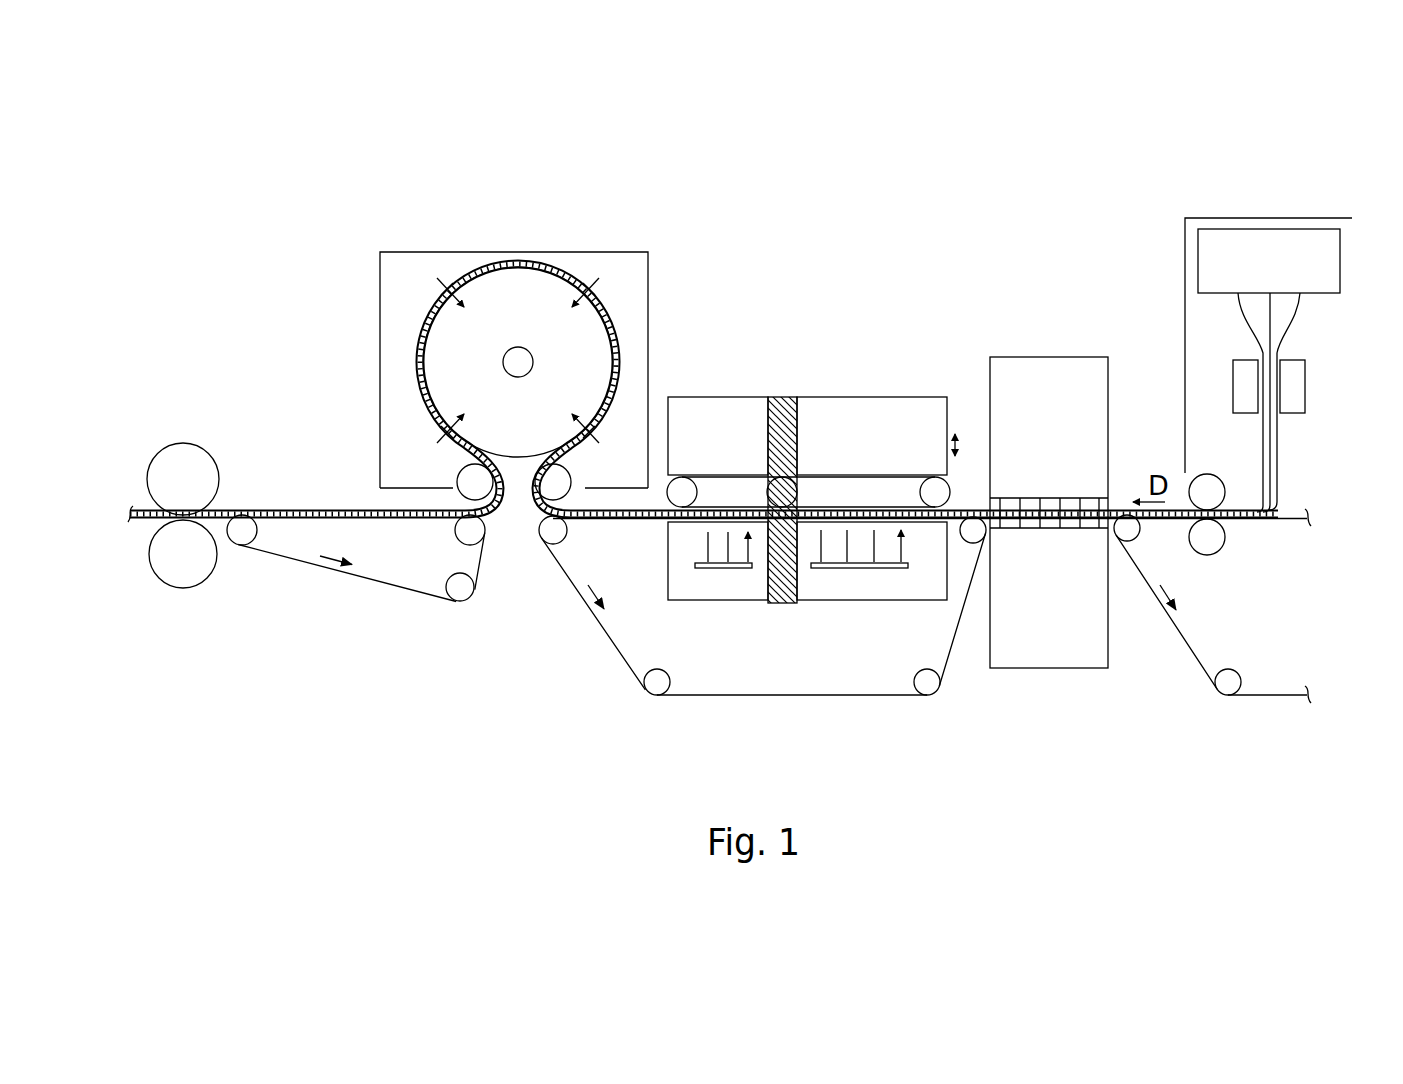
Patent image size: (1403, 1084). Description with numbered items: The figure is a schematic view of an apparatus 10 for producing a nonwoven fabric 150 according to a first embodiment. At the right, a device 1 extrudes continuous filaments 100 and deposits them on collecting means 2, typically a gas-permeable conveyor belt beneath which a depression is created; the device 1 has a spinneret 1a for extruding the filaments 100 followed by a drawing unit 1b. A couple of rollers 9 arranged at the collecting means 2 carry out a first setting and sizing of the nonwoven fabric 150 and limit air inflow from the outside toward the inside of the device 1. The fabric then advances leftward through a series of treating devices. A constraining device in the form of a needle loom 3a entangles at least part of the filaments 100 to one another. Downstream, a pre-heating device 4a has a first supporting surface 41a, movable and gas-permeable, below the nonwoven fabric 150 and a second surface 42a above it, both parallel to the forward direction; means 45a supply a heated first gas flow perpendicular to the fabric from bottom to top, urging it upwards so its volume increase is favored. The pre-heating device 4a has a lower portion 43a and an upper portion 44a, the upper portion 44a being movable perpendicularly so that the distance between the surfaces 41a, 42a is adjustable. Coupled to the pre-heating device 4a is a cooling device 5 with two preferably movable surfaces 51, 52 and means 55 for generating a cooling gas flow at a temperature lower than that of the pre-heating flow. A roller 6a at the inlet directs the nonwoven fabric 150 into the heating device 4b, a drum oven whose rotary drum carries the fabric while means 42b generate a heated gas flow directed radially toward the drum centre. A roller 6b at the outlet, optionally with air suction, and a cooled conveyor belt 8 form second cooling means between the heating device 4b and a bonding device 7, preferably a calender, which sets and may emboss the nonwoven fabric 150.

The device for extruding continuous filaments 1 is at (1287, 217).
The spinneret 1a is at (1341, 258).
The drawing unit 1b is at (1306, 388).
The collecting means 2 is at (1285, 521).
The needle loom 3a is at (1050, 357).
The pre-heating device 4a is at (908, 301).
The heating device 4b is at (599, 228).
The cooling device 5 is at (733, 368).
The roller 6a is at (553, 485).
The roller 6b is at (478, 488).
The bonding device 7 is at (189, 609).
The cooled conveyor belt 8 is at (377, 584).
The rollers 9 is at (1210, 555).
The apparatus for producing a nonwoven fabric 10 is at (309, 229).
The first supporting surface 41a is at (807, 524).
The second surface 42a is at (833, 509).
The means for generating a flow of gas 42b is at (522, 349).
The portion 43a is at (928, 583).
The portion 44a is at (903, 405).
The means for supplying or generating a flow of gas 45a is at (867, 569).
The surface 51 is at (662, 517).
The surface 52 is at (715, 512).
The means for generating a flow of gas 55 is at (728, 570).
The continuous filaments 100 is at (1280, 454).
The nonwoven fabric 150 is at (627, 512).